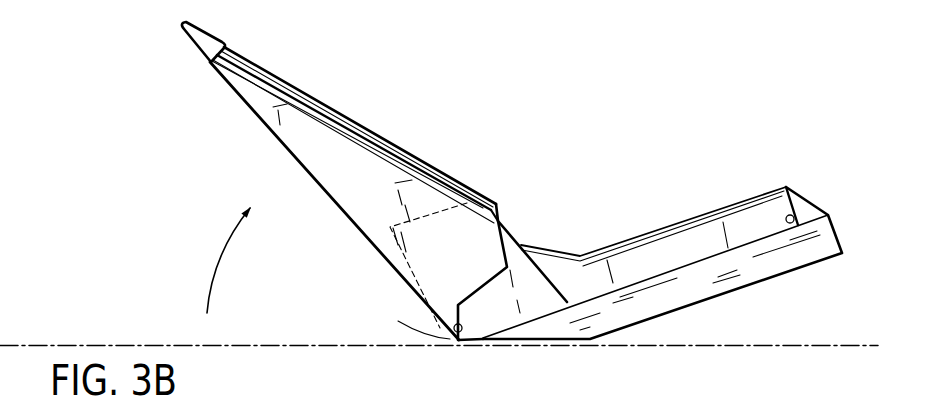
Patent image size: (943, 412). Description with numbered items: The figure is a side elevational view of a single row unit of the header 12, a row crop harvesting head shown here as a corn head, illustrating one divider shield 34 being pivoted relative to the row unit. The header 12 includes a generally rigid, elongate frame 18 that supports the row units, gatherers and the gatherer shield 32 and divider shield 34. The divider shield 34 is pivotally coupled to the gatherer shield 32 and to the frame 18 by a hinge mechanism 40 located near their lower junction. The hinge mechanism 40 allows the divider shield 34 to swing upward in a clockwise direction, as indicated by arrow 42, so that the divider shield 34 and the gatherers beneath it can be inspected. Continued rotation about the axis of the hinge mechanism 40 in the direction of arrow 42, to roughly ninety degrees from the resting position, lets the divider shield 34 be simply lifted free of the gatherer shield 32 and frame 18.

The header 12 is at (577, 180).
The frame 18 is at (759, 281).
The gatherer shield 32 is at (673, 223).
The divider shield 34 is at (361, 123).
The hinge mechanism 40 is at (450, 330).
The arrow 42 is at (218, 262).